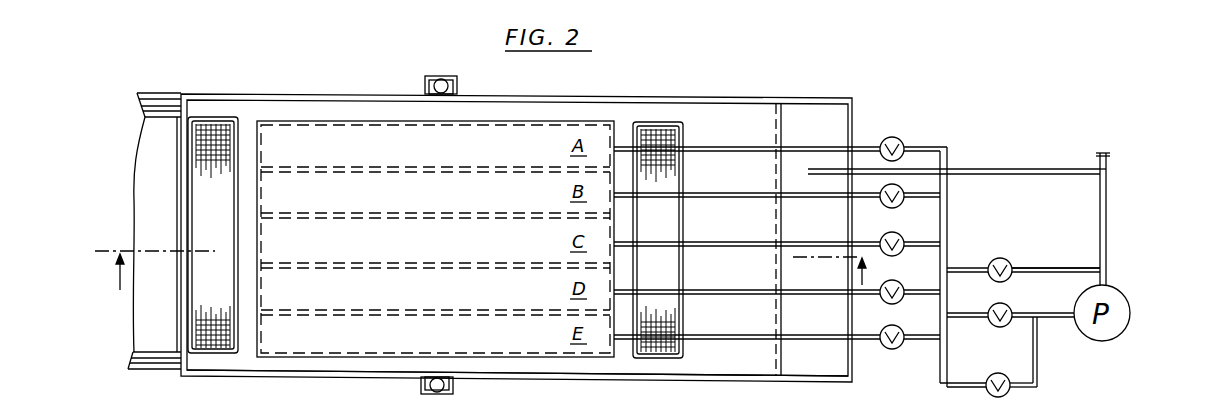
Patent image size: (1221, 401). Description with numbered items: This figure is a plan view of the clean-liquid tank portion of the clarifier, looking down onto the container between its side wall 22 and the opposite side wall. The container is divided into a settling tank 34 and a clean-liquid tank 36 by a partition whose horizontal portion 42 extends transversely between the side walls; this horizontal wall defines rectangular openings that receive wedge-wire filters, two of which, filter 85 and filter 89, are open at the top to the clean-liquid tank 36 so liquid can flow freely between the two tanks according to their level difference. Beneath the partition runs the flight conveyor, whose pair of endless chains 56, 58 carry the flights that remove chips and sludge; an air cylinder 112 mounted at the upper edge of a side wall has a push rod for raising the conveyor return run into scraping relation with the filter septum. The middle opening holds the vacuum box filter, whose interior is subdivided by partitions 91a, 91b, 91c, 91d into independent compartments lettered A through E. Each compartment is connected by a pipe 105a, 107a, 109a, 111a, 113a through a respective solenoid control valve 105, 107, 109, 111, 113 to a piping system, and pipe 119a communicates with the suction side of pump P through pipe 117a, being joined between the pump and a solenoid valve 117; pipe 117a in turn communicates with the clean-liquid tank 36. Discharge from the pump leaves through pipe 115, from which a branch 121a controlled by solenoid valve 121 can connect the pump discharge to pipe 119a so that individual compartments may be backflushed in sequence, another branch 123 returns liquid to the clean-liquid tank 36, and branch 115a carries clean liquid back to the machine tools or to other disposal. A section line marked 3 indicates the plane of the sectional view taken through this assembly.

The side wall 22 is at (546, 102).
The endless chain 56 is at (158, 100).
The endless chain 58 is at (147, 370).
The filter 85 is at (220, 213).
The horizontal portion of partition 42 is at (266, 108).
The partition 91a is at (316, 169).
The partition 91b is at (305, 213).
The partition 91c is at (320, 263).
The partition 91d is at (316, 310).
The filter 89 is at (668, 231).
The pipe 105a is at (737, 137).
The pipe 107a is at (714, 190).
The pipe 109a is at (735, 232).
The pipe 111a is at (729, 280).
The pipe 113a is at (731, 325).
The clean-liquid tank 36 is at (826, 369).
The section line 3 is at (484, 271).
The air cylinder 112 is at (444, 76).
The settling tank 34 is at (352, 378).
The solenoid control valve 105 is at (900, 139).
The solenoid control valve 107 is at (905, 204).
The solenoid control valve 109 is at (905, 234).
The solenoid control valve 111 is at (906, 280).
The solenoid control valve 113 is at (881, 350).
The pipe 119a is at (947, 160).
The solenoid valve 121 is at (1010, 260).
The branch pipe 121a is at (1058, 258).
The solenoid valve 117 is at (1012, 303).
The pipe 117a is at (1053, 320).
The pipe 115 is at (1107, 241).
The branch pipe 115a is at (1112, 160).
The branch pipe 123 is at (1076, 168).